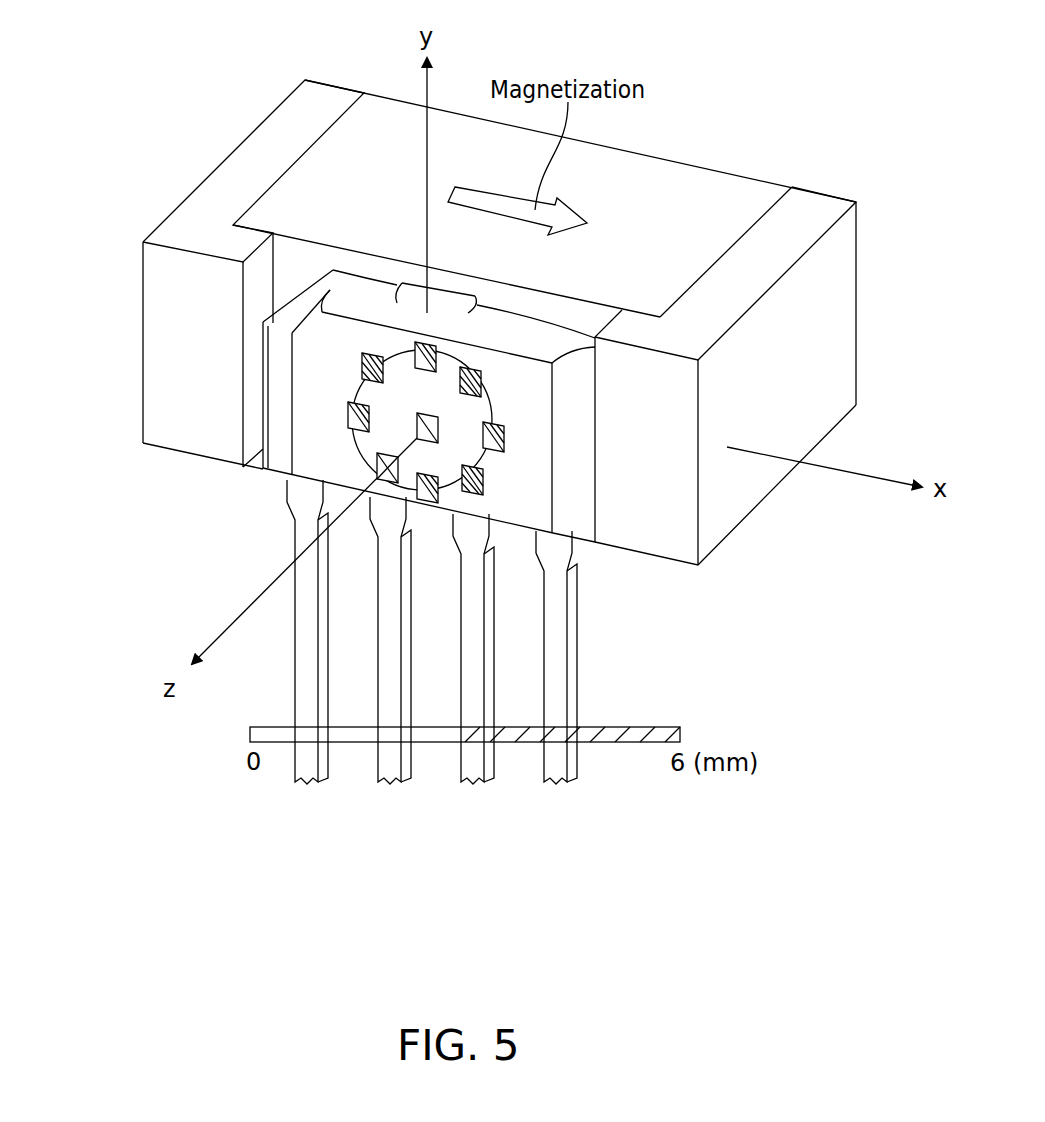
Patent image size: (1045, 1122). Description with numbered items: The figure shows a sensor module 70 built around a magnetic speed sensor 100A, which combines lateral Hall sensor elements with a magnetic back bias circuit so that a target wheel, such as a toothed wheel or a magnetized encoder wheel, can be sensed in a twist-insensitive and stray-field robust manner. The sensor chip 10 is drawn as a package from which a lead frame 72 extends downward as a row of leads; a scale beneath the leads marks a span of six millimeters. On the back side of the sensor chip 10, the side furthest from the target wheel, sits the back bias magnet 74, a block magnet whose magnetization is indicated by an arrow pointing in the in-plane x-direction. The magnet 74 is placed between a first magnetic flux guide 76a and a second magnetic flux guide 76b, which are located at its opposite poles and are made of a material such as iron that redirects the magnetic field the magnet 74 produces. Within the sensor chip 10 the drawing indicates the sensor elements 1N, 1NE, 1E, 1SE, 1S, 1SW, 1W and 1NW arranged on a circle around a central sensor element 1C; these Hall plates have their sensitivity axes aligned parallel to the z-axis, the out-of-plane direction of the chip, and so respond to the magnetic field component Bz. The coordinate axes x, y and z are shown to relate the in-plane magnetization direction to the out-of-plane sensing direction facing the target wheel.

The sensor module 70 is at (848, 56).
The first magnetic flux guide 76a is at (225, 182).
The back bias magnet 74 is at (713, 210).
The second magnetic flux guide 76b is at (800, 210).
The magnetic speed sensor 100A is at (214, 532).
The sensor chip 10 is at (278, 380).
The lead frame 72 is at (575, 818).
The sensor element 1N is at (415, 350).
The sensor element 1NW is at (362, 368).
The sensor element 1NE is at (480, 378).
The sensor element 1W is at (348, 420).
The sensor element 1C is at (437, 428).
The sensor element 1E is at (503, 440).
The sensor element 1SW is at (377, 468).
The sensor element 1S is at (427, 502).
The sensor element 1SE is at (483, 480).